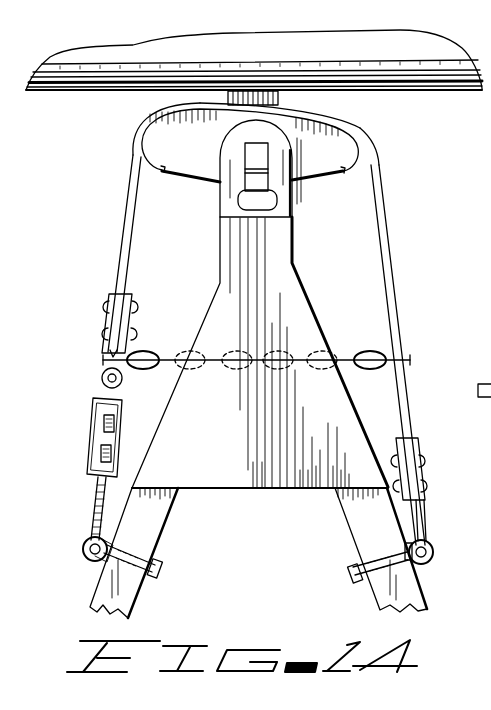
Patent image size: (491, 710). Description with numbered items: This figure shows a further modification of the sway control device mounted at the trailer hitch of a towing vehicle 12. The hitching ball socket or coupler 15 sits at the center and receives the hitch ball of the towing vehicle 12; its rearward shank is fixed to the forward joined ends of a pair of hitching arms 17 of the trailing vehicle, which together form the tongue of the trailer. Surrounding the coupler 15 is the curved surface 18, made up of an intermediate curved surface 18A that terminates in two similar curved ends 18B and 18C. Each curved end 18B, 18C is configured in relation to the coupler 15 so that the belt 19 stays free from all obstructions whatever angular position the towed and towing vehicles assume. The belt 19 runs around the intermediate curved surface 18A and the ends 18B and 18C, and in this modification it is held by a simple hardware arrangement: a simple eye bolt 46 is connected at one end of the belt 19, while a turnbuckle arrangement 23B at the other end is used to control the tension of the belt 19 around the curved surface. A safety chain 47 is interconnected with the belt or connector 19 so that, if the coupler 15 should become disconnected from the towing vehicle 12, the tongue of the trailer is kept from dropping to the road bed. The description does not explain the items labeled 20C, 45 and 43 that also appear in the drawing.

The vehicle 12 is at (452, 51).
The curved surface 18 is at (181, 105).
The intermediate curved surface 18A is at (313, 108).
The curved end 18B is at (374, 157).
The curved end 18C is at (138, 149).
The coupler 15 is at (228, 148).
The loop bottom bar 20C is at (206, 172).
The belt 19 is at (118, 273).
The safety chain 47 is at (177, 353).
The turnbuckle arrangement 23B is at (91, 449).
The hitching arms 17 is at (168, 527).
The hinge block 45 is at (427, 507).
The eye bolt 46 is at (88, 557).
The adjacent figure element 43 is at (484, 374).